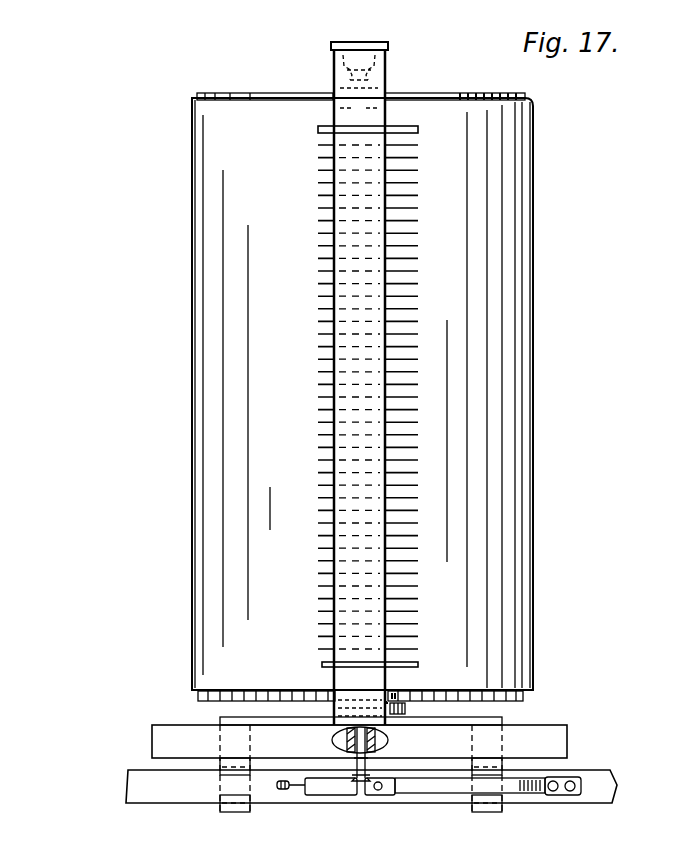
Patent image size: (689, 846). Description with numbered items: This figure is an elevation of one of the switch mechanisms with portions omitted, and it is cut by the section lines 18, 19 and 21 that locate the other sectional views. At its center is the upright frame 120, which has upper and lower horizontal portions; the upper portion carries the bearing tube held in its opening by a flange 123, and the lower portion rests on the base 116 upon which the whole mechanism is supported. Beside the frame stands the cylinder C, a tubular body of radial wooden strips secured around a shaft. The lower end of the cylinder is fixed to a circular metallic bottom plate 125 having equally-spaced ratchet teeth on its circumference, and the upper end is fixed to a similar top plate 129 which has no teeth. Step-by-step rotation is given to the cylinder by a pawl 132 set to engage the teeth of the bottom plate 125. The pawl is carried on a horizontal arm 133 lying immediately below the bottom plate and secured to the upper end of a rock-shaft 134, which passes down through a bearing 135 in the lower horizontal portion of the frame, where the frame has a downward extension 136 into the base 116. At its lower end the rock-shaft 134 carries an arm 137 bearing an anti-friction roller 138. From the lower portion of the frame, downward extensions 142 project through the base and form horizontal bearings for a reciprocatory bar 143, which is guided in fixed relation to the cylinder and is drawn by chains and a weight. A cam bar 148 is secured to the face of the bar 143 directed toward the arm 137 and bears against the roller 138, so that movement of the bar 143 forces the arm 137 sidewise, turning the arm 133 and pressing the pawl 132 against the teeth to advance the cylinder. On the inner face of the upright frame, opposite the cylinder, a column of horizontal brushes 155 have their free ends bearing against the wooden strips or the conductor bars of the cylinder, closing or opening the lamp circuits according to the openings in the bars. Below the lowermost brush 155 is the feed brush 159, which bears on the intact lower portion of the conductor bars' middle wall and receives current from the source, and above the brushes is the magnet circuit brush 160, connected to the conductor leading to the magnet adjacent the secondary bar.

The cylinder C is at (347, 394).
The section line 18— 18 is at (360, 115).
The section line 19— 19 is at (637, 689).
The section line 21— 21 is at (473, 408).
The base 116 is at (152, 745).
The frame 120 is at (387, 65).
The flange 123 is at (388, 46).
The bottom plate 125 is at (512, 703).
The top plate 129 is at (525, 97).
The pawl 132 is at (406, 706).
The horizontal arm 133 is at (404, 714).
The rock-shaft 134 is at (380, 748).
The bearing 135 is at (345, 746).
The downward extension 136 is at (335, 738).
The arm 137 is at (338, 798).
The anti-friction roller 138 is at (277, 791).
The downward extensions 142 is at (220, 770).
The reciprocatory bar 143 is at (218, 800).
The cam bar 148 is at (447, 790).
The brushes 155 is at (415, 165).
The feed brush 159 is at (418, 666).
The magnet circuit brush 160 is at (410, 128).